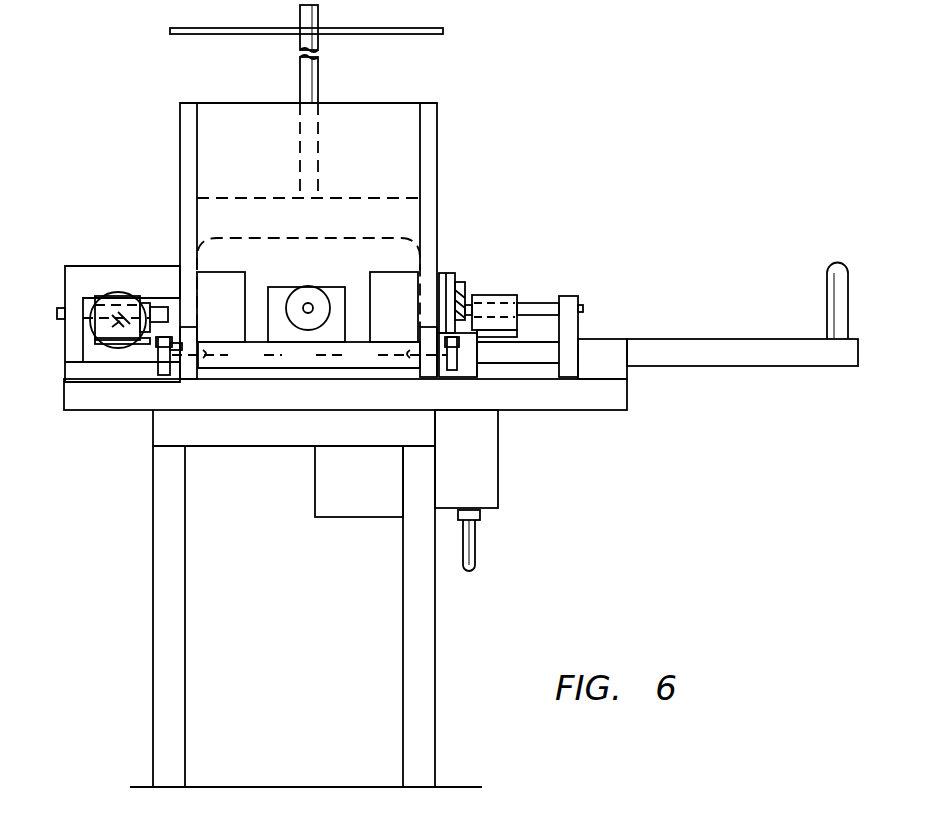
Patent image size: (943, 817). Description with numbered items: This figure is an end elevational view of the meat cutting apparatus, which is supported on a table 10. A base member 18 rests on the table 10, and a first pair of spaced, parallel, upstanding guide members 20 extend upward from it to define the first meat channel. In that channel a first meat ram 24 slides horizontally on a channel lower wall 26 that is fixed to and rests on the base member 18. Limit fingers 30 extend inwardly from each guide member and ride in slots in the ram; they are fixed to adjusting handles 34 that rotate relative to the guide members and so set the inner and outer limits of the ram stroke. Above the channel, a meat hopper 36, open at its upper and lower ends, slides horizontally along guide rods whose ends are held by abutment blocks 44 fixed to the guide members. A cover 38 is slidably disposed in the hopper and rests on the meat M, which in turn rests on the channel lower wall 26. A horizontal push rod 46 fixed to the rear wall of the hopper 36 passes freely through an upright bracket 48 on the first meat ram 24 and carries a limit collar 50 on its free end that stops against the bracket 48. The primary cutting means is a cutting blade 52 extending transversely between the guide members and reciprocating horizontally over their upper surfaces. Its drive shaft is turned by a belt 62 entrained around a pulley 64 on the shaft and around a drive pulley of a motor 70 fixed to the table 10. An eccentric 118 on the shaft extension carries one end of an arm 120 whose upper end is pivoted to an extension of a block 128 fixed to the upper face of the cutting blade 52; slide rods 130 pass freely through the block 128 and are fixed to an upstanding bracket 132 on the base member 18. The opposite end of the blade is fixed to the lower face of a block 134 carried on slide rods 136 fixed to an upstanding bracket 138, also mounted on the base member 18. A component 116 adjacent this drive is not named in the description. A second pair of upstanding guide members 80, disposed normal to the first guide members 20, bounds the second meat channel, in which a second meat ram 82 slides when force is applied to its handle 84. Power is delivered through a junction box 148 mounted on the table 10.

The table 10 is at (261, 438).
The base member 18 is at (580, 402).
The guide members 20 is at (193, 374).
The first meat ram 24 is at (286, 364).
The channel lower wall 26 is at (338, 372).
The limit fingers 30 is at (309, 355).
The adjusting handles 34 is at (165, 377).
The meat hopper 36 is at (437, 118).
The cover 38 is at (344, 196).
The rearward abutment blocks 44 is at (209, 311).
The push rod 46 is at (325, 290).
The upright bracket 48 is at (278, 294).
The limit collar 50 is at (313, 303).
The cutting blade 52 is at (147, 340).
The belt 62 is at (453, 273).
The pulley 64 is at (463, 292).
The motor 70 is at (345, 486).
The second guide members 80 is at (590, 348).
The second meat ram 82 is at (753, 350).
The handle 84 is at (837, 312).
The motor 116 is at (115, 275).
The eccentric 118 is at (128, 292).
The arm 120 is at (141, 308).
The block 128 is at (107, 295).
The slide rods 130 is at (90, 302).
The upstanding bracket 132 is at (94, 376).
The block 134 is at (510, 295).
The slide rods 136 is at (538, 302).
The upstanding bracket 138 is at (570, 295).
The junction box 148 is at (480, 470).
The meat M is at (413, 247).